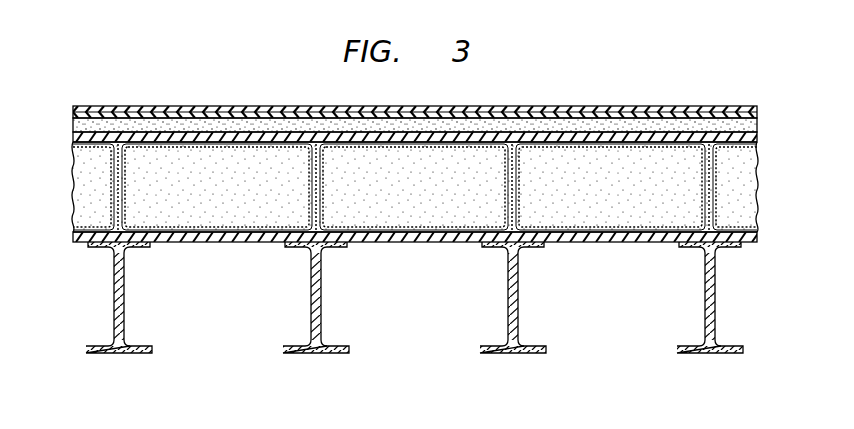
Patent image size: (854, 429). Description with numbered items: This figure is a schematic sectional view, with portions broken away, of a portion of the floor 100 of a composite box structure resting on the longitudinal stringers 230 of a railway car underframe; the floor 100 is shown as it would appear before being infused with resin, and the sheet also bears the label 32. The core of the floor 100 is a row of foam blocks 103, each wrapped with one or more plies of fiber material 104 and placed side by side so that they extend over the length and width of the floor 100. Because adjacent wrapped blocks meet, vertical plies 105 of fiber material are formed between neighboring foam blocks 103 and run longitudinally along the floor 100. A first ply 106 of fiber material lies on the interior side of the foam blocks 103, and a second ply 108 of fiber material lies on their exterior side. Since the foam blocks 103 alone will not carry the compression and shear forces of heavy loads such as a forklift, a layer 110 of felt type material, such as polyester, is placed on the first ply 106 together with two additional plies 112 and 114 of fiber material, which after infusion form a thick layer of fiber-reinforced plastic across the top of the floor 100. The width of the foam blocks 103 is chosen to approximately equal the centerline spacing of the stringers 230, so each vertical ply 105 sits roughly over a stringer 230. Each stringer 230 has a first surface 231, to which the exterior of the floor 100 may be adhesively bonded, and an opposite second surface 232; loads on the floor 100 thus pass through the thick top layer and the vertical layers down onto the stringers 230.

The composite deck panel section 32 is at (220, 65).
The floor 100 is at (564, 66).
The foam blocks 103 is at (73, 208).
The plies of fiber material 104 is at (73, 147).
The vertical plies of fiber material 105 is at (117, 167).
The first ply of fiber material 106 is at (92, 138).
The second ply of fiber material 108 is at (220, 243).
The layer of felt type material 110 is at (757, 118).
The additional ply of fiber material 112 is at (108, 112).
The additional ply of fiber material 114 is at (612, 106).
The longitudinal stringers 230 is at (113, 318).
The first surface 231 is at (150, 249).
The second surface 232 is at (108, 355).